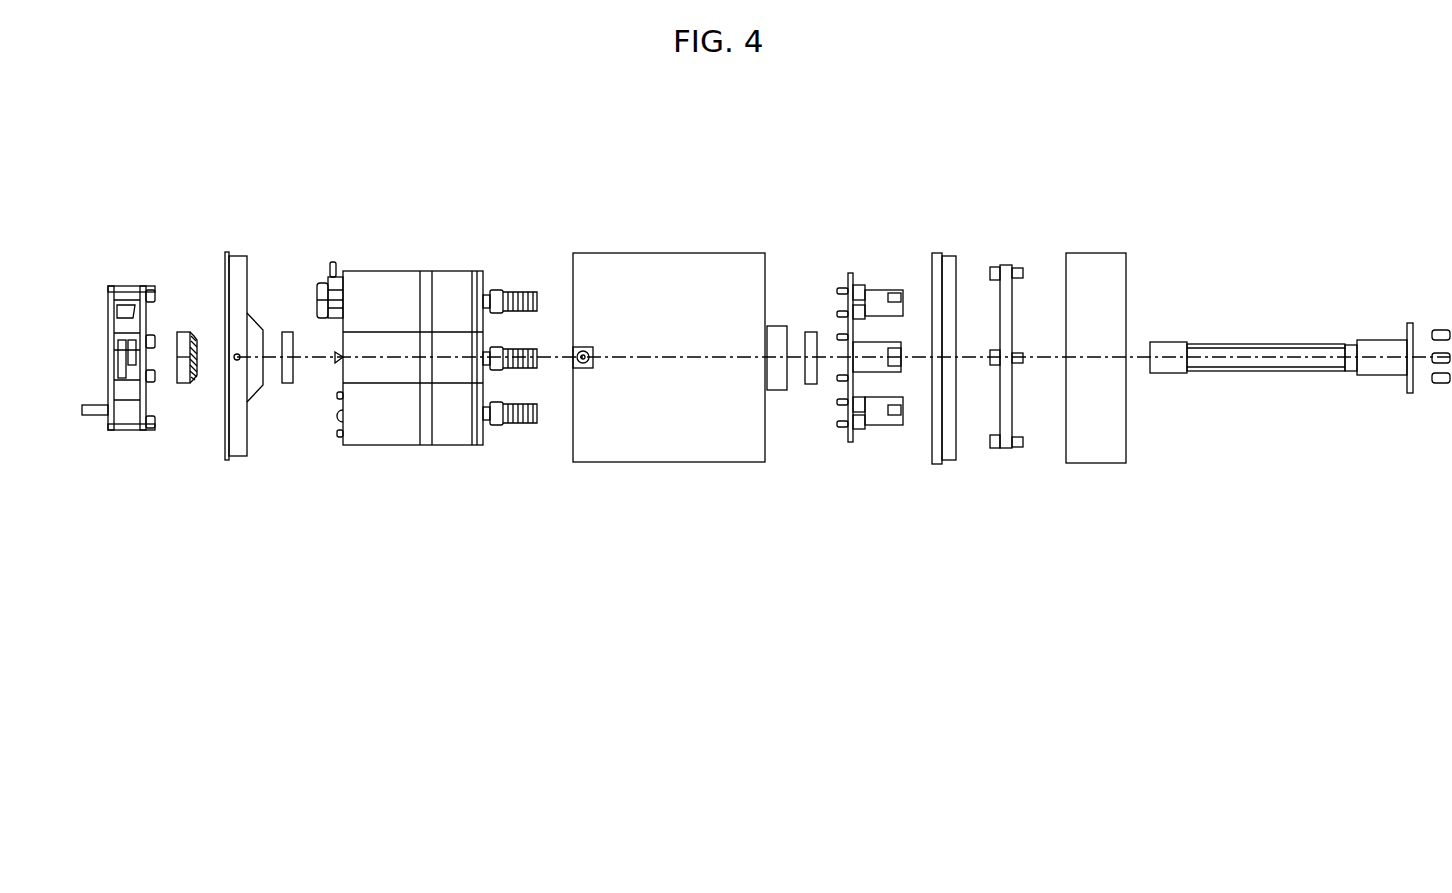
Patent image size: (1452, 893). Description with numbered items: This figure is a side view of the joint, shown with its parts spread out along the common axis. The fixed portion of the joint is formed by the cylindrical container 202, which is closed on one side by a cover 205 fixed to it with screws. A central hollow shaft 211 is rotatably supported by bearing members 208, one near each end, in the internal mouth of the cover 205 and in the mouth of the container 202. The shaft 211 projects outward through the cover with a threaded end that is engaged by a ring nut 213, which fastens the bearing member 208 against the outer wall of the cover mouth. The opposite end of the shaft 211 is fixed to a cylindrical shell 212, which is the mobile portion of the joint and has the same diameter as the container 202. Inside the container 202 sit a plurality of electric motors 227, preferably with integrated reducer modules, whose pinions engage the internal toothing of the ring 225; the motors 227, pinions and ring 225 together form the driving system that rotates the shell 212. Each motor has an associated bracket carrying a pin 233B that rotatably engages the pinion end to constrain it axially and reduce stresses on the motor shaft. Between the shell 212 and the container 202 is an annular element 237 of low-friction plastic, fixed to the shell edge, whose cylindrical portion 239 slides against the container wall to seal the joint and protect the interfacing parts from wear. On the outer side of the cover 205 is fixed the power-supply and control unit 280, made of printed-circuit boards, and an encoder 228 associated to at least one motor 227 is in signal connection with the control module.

The cylindrical container 202 is at (660, 268).
The cover 205 is at (223, 460).
The bearing members 208 is at (287, 385).
The central hollow shaft 211 is at (1272, 345).
The cylindrical shell 212 is at (1105, 447).
The ring nut 213 is at (183, 332).
The ring 225 is at (1006, 447).
The electric motors 227 is at (422, 512).
The encoder 228 is at (320, 285).
The pin 233B is at (877, 430).
The annular element 237 is at (952, 254).
The cylindrical portion 239 is at (932, 252).
The power-supply and control unit 280 is at (100, 415).